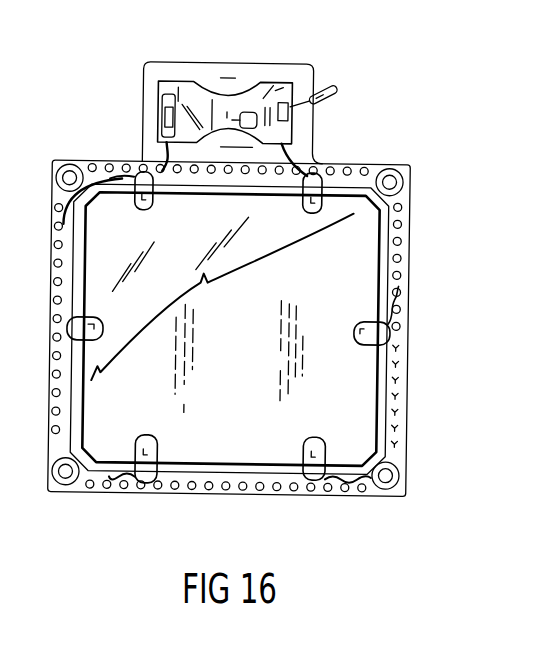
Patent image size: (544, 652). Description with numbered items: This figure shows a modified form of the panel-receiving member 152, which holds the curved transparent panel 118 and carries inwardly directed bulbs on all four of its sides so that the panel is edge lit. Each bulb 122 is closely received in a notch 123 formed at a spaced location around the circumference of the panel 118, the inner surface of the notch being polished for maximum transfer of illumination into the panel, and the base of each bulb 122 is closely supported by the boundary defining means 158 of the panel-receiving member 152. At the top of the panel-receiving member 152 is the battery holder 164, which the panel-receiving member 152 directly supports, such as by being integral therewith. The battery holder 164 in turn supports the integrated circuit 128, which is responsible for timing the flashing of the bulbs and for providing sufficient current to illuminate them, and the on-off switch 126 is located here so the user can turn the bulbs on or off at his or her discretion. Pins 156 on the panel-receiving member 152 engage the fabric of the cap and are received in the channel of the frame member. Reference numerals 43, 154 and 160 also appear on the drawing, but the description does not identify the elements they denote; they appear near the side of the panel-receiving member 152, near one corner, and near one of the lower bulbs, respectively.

The frame side 43 is at (32, 319).
The curved transparent panel 118 is at (122, 228).
The bulb 122 is at (323, 193).
The notch 123 is at (107, 172).
The on-off switch 126 is at (338, 91).
The integrated circuit 128 is at (192, 98).
The panel-receiving member 152 is at (400, 398).
The upper left mounting boss 154 is at (50, 172).
The pin 156 is at (408, 210).
The boundary defining means 158 is at (80, 398).
The lower left spring clip 160 is at (137, 468).
The battery holder 164 is at (300, 75).